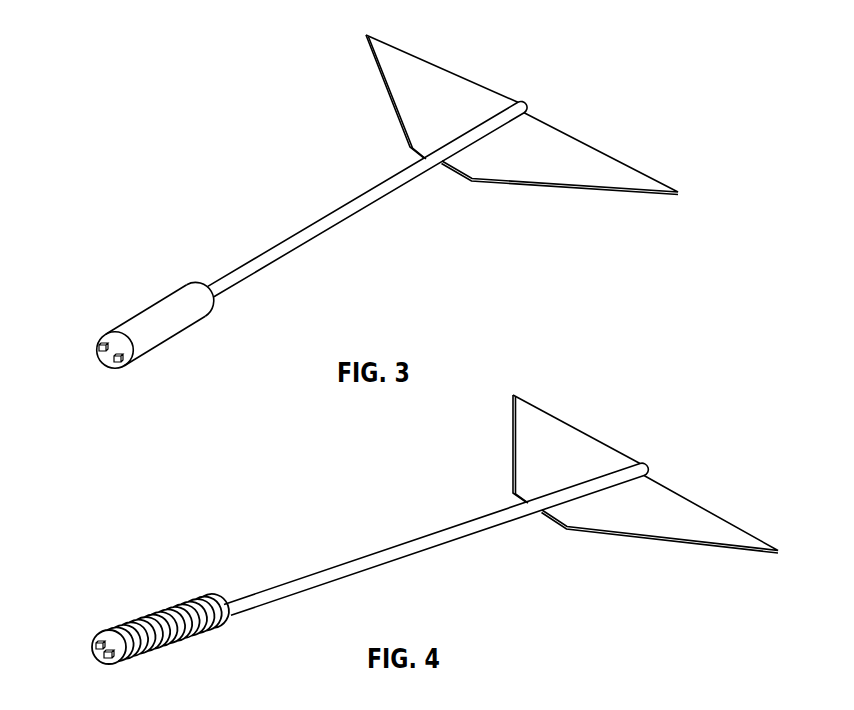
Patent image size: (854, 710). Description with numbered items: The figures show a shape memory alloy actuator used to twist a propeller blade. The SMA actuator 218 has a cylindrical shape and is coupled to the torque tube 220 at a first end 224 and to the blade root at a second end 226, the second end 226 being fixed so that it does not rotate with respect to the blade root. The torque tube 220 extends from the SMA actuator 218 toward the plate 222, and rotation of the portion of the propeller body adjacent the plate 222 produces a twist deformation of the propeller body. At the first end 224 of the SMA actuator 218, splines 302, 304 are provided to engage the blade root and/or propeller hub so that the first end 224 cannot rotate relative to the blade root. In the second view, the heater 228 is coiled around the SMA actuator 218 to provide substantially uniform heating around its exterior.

In FIG. 3, the SMA actuator 218 is at (155, 292).
In FIG. 4, the SMA actuator 218 is at (160, 631).
In FIG. 3, the torque tube 220 is at (313, 226).
In FIG. 4, the torque tube 220 is at (373, 556).
In FIG. 3, the plate 222 is at (393, 112).
In FIG. 4, the plate 222 is at (511, 458).
In FIG. 3, the first end 224 is at (120, 318).
In FIG. 3, the second end 226 is at (196, 278).
In FIG. 4, the heater 228 is at (163, 603).
In FIG. 3, the spline 302 is at (99, 348).
In FIG. 4, the spline 302 is at (96, 643).
In FIG. 3, the spline 304 is at (117, 362).
In FIG. 4, the spline 304 is at (104, 657).